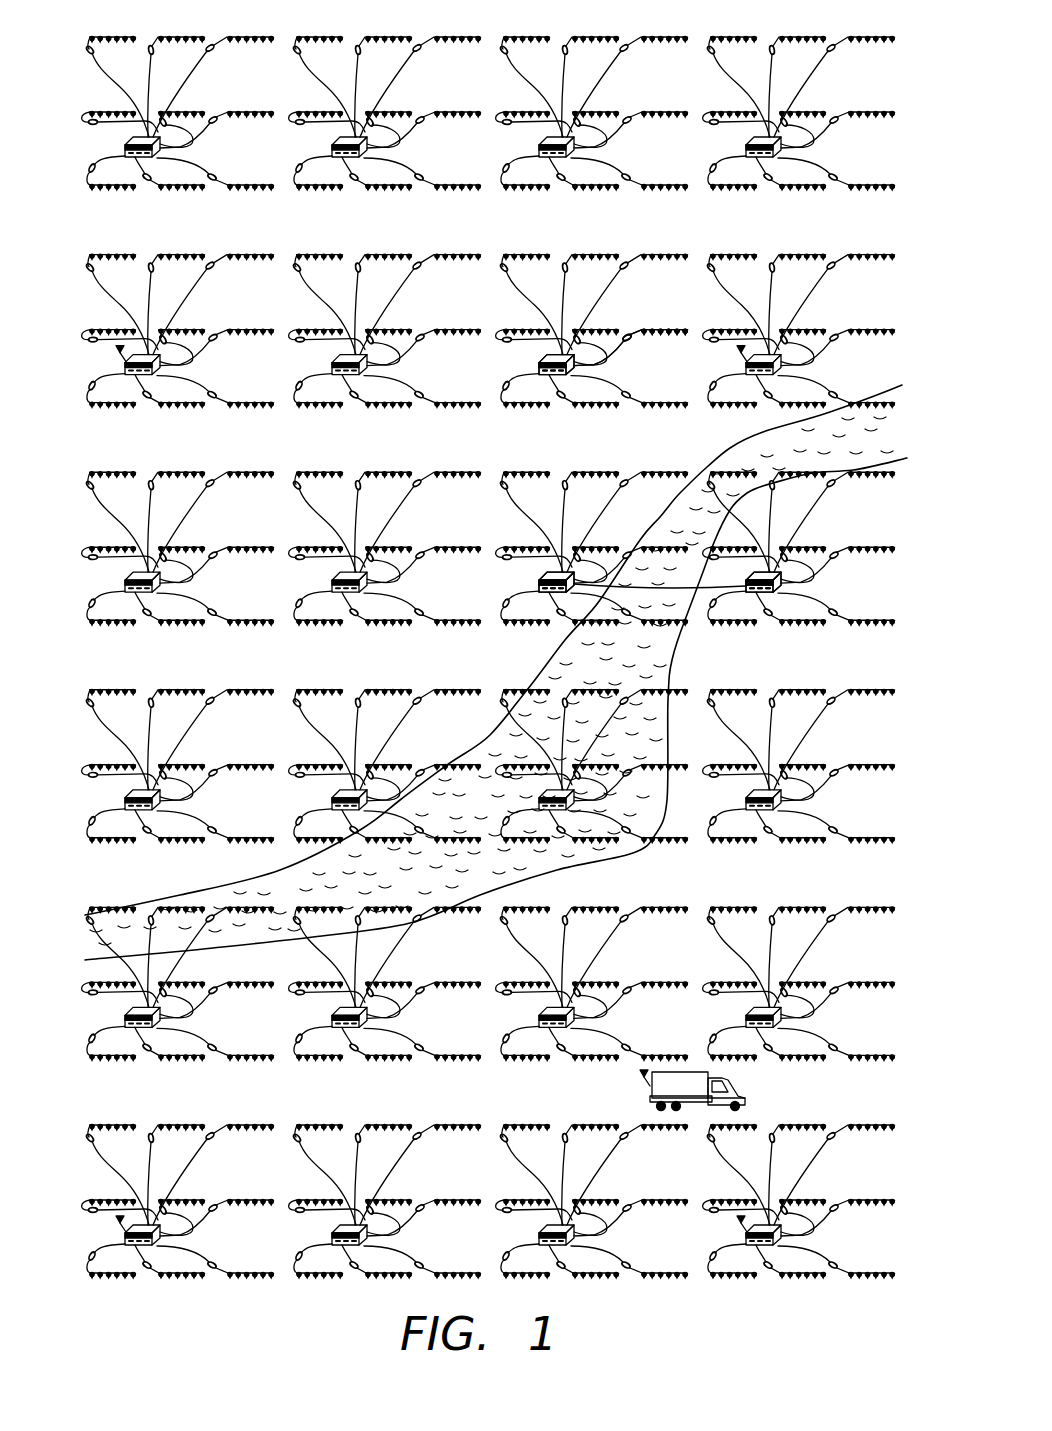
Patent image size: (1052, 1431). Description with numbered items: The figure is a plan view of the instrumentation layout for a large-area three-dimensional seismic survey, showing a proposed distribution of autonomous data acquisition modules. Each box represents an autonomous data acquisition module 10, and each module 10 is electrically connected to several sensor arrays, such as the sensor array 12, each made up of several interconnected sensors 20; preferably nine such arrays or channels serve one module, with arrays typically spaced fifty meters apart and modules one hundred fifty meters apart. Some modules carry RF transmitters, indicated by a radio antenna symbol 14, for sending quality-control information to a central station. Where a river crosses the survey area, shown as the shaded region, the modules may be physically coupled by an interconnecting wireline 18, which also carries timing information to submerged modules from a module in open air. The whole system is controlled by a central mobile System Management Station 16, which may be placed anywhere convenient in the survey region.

The autonomous data acquisition module 10 is at (538, 367).
The sensor array 12 is at (657, 314).
The radio antenna symbol 14 is at (736, 355).
The central mobile System Management Station 16 is at (758, 1094).
The interconnecting wireline 18 is at (700, 589).
The sensors 20 is at (661, 335).